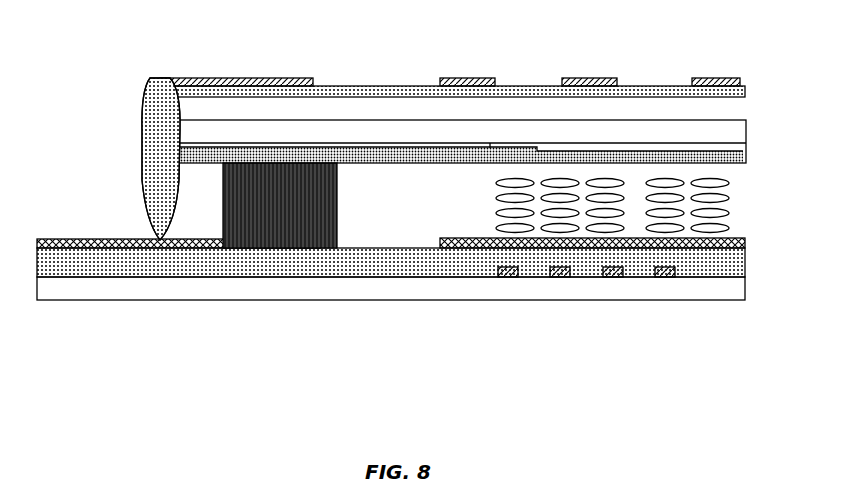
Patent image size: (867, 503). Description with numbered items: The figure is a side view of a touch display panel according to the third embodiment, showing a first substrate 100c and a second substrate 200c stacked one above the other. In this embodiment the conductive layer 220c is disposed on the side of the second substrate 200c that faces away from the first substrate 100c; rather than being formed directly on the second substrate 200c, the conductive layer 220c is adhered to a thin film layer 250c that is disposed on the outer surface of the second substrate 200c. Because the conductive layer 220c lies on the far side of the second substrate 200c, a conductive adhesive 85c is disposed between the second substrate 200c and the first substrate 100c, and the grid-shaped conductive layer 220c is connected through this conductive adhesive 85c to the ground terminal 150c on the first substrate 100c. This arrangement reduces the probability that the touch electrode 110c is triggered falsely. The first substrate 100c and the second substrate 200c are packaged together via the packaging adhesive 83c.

The first substrate 100c is at (406, 277).
The touch electrode 110c is at (743, 240).
The ground terminal 150c is at (60, 242).
The packaging adhesive 83c is at (315, 240).
The conductive adhesive 85c is at (158, 167).
The second substrate 200c is at (440, 134).
The conductive layer 220c is at (458, 78).
The thin film layer 250c is at (743, 88).